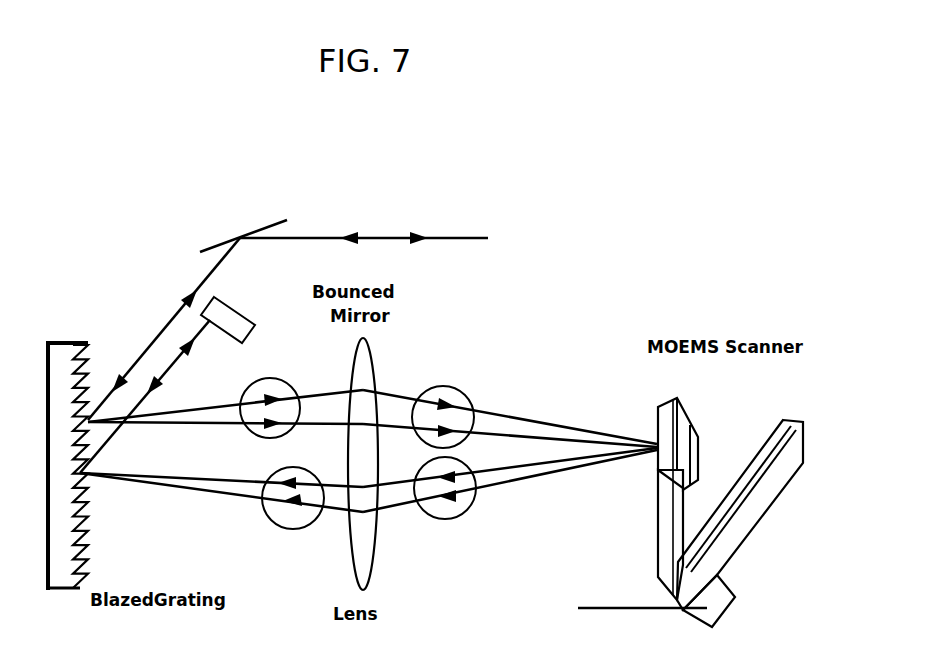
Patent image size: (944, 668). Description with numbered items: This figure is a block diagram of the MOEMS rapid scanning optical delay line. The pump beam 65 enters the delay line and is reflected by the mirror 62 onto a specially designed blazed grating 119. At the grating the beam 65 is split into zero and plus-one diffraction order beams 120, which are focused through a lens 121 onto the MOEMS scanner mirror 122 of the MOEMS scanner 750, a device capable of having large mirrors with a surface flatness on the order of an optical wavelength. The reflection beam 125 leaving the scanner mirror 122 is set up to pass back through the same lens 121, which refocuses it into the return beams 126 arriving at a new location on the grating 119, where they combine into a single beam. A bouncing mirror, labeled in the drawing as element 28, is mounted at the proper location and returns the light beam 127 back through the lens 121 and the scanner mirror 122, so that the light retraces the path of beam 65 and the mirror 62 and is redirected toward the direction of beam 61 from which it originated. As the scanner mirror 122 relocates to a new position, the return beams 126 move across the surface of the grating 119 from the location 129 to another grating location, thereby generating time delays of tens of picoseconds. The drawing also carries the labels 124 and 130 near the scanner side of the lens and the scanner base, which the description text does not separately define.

The beam 61 is at (397, 238).
The mirror 62 is at (238, 236).
The pump beam 65 is at (300, 238).
The bounced mirror 28 is at (250, 306).
The blazed grating 119 is at (64, 558).
The diffraction order beams 120 is at (275, 387).
The lens 121 is at (380, 371).
The MOEMS scanner mirror 122 is at (641, 463).
The upper beam pair (scanner side) 124 is at (447, 383).
The reflection beam 125 is at (447, 510).
The return beams 126 is at (283, 515).
The light beam 127 is at (112, 443).
The grating location 129 is at (87, 485).
The scanner base line 130 is at (612, 608).
The MOEMS scanner 750 is at (723, 441).